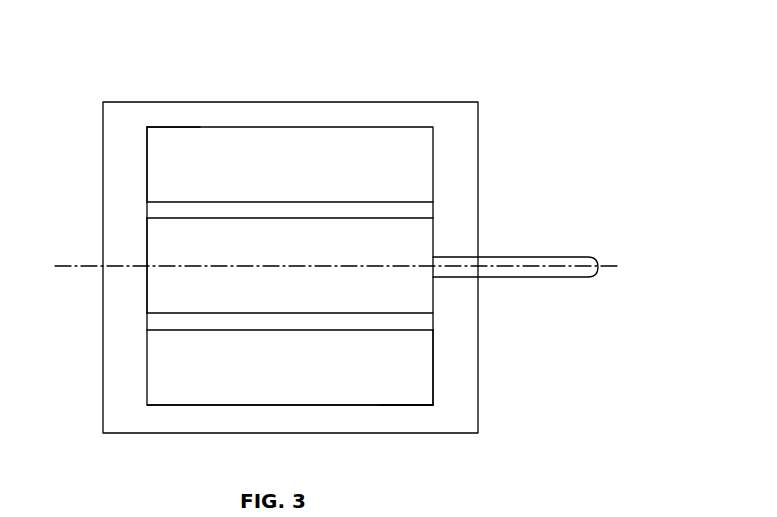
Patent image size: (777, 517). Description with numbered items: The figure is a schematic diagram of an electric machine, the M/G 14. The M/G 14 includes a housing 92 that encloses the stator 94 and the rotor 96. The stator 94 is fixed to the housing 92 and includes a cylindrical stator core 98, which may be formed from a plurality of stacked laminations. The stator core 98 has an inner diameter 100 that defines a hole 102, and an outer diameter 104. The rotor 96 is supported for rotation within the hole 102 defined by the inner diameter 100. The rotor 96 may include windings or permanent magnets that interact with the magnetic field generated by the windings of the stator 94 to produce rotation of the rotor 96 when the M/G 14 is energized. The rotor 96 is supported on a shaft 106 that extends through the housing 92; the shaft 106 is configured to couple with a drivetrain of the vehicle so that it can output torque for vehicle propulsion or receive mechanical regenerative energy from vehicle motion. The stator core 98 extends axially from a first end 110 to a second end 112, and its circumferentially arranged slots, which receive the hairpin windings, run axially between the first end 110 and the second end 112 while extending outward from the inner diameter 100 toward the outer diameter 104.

The M/G 14 is at (478, 44).
The housing 92 is at (293, 102).
The stator 94 is at (200, 128).
The rotor 96 is at (147, 245).
The stator core 98 is at (435, 165).
The inner diameter 100 is at (410, 203).
The hole 102 is at (458, 319).
The outer diameter 104 is at (205, 405).
The shaft 106 is at (520, 255).
The first end 110 is at (147, 168).
The second end 112 is at (437, 365).